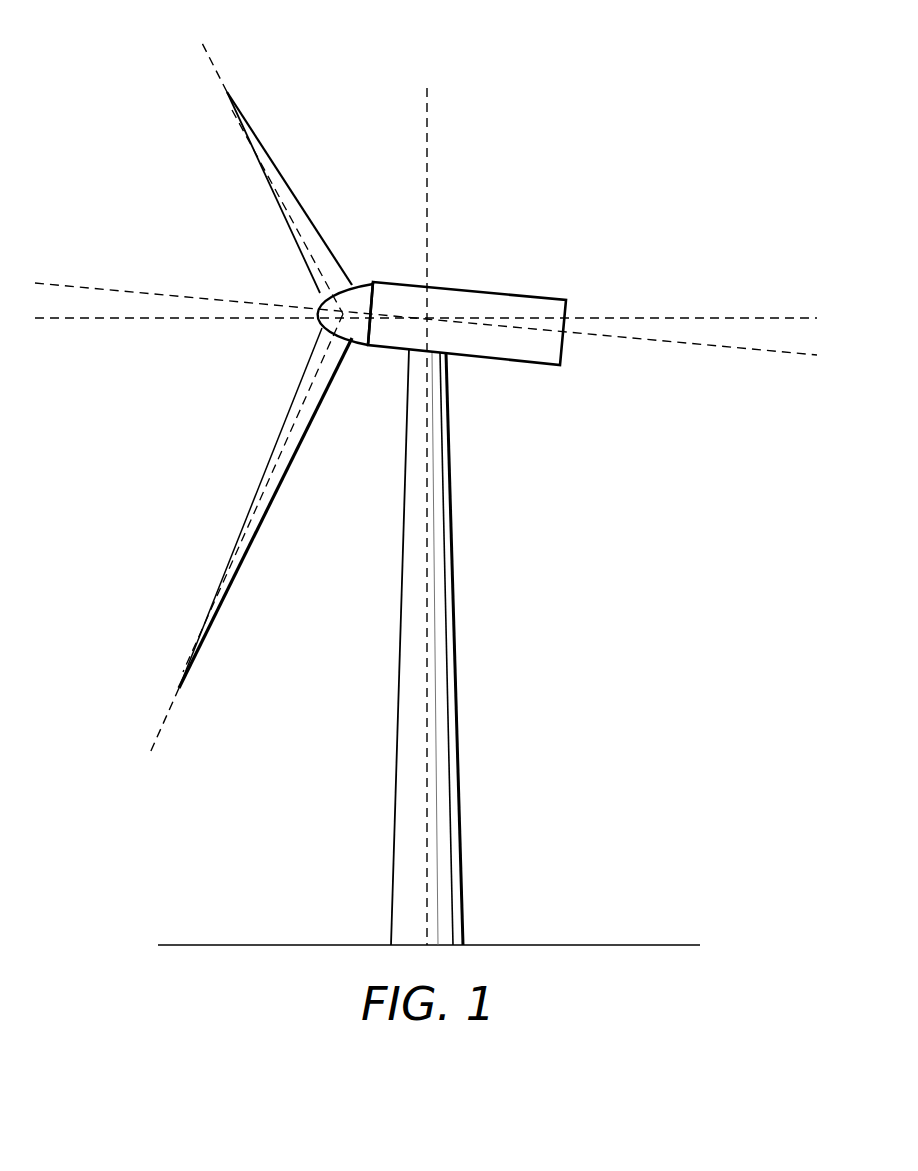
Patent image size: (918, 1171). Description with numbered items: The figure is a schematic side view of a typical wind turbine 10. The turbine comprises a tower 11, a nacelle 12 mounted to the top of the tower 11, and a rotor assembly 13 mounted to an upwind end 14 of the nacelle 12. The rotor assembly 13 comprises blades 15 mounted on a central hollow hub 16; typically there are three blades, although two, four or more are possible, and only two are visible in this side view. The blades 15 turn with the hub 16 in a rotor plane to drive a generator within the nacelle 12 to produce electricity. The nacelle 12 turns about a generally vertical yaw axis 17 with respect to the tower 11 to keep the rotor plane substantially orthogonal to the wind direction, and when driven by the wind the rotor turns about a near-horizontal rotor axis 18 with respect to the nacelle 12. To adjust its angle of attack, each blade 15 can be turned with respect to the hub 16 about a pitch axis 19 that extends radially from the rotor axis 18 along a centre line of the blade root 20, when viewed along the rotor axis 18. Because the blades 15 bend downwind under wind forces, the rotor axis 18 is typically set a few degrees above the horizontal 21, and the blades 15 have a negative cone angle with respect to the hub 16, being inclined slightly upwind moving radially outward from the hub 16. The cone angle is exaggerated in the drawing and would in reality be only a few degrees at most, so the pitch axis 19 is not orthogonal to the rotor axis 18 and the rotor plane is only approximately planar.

The wind turbine 10 is at (664, 163).
The tower 11 is at (397, 760).
The nacelle 12 is at (537, 295).
The rotor assembly 13 is at (278, 336).
The upwind end 14 is at (373, 282).
The blades 15 is at (287, 183).
The central hollow hub 16 is at (310, 297).
The yaw axis 17 is at (432, 112).
The rotor axis 18 is at (93, 288).
The pitch axis 19 is at (212, 58).
The blade root 20 is at (328, 375).
The horizontal 21 is at (797, 318).